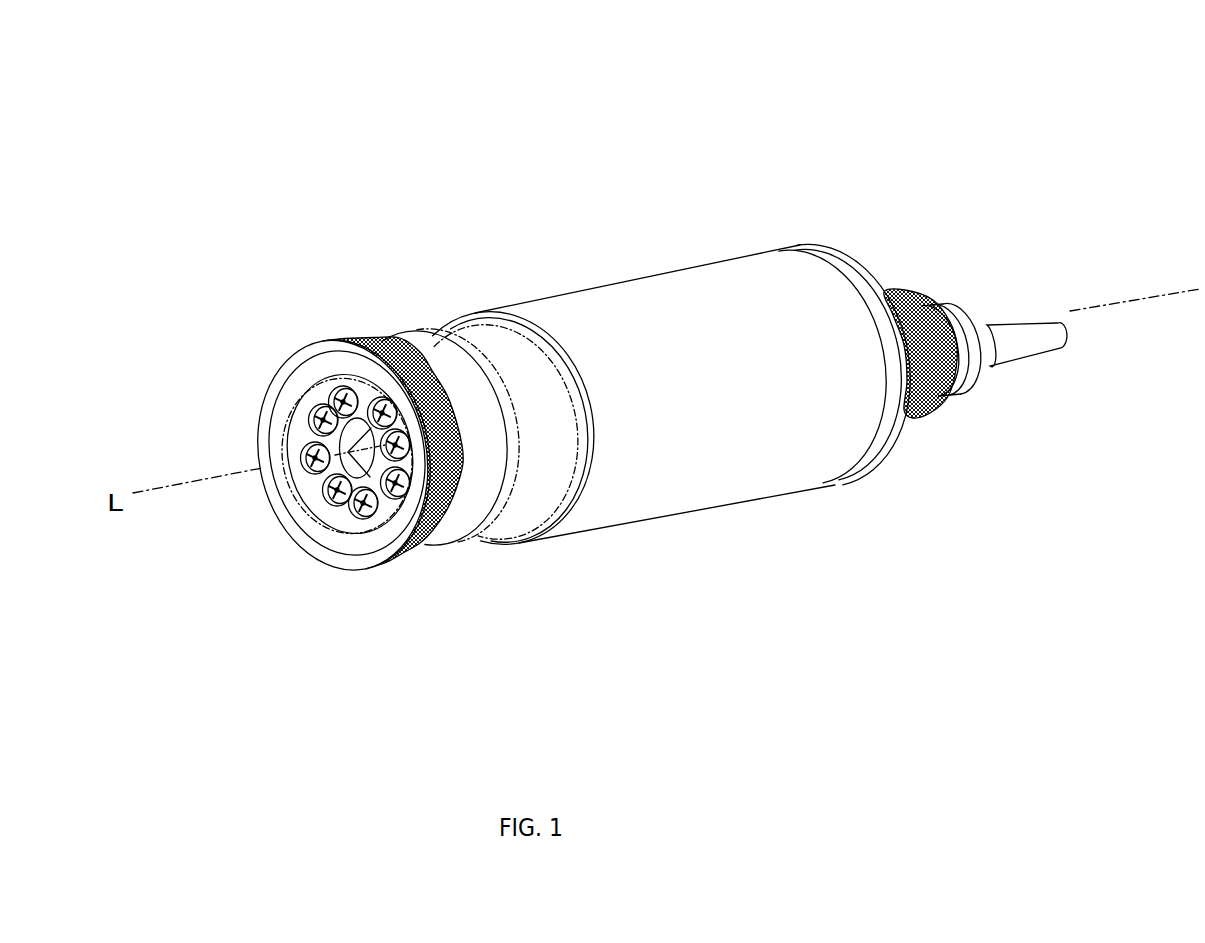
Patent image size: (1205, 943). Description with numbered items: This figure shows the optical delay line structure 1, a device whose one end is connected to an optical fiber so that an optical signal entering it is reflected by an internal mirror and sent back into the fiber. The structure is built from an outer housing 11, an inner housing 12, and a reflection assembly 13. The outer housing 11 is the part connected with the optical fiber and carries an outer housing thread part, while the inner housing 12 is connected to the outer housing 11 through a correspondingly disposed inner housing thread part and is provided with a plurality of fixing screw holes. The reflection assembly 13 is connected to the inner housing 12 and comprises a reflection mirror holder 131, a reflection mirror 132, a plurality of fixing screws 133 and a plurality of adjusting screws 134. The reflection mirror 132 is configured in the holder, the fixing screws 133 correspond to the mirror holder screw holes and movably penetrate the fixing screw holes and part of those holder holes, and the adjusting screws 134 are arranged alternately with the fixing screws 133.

The optical delay line structure 1 is at (612, 361).
The outer housing 11 is at (745, 325).
The inner housing 12 is at (495, 353).
The reflection assembly 13 is at (296, 445).
The reflection mirror holder 131 is at (367, 392).
The reflection mirror 132 is at (372, 442).
The fixing screws 133 is at (309, 419).
The adjusting screws 134 is at (342, 390).